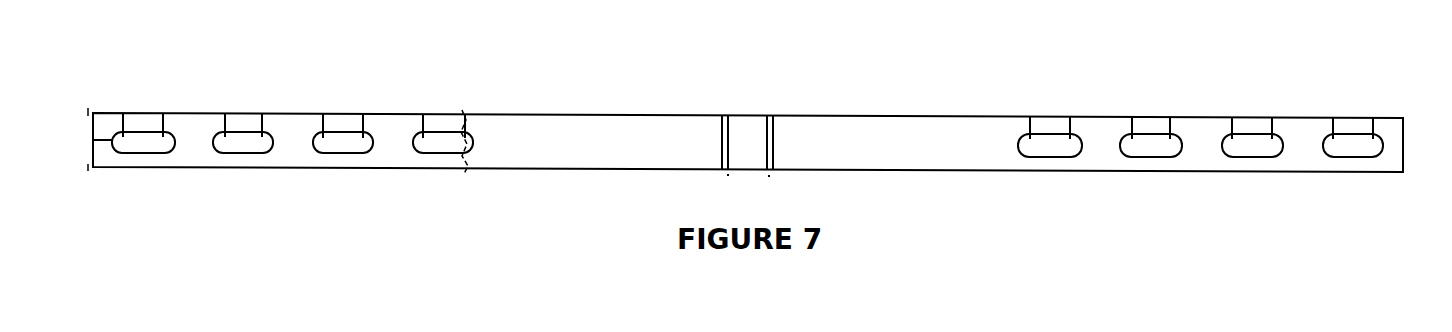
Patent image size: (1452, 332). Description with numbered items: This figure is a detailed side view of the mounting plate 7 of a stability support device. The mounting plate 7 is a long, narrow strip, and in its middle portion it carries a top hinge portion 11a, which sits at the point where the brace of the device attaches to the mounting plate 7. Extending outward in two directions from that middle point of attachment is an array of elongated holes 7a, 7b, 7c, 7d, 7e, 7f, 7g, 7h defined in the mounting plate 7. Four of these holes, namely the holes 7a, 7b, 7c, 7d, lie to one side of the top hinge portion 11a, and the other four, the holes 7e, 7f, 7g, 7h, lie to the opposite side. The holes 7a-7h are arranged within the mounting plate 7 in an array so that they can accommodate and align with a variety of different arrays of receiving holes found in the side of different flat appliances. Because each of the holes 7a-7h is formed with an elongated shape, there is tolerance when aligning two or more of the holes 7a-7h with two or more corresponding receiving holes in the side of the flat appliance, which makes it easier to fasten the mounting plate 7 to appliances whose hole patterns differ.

The mounting plate 7 is at (968, 117).
The elongated hole 7a is at (142, 153).
The elongated hole 7b is at (250, 153).
The elongated hole 7c is at (353, 153).
The elongated hole 7d is at (433, 153).
The elongated hole 7e is at (1052, 157).
The elongated hole 7f is at (1158, 157).
The elongated hole 7g is at (1265, 157).
The elongated hole 7h is at (1360, 157).
The top hinge portion 11a is at (775, 160).